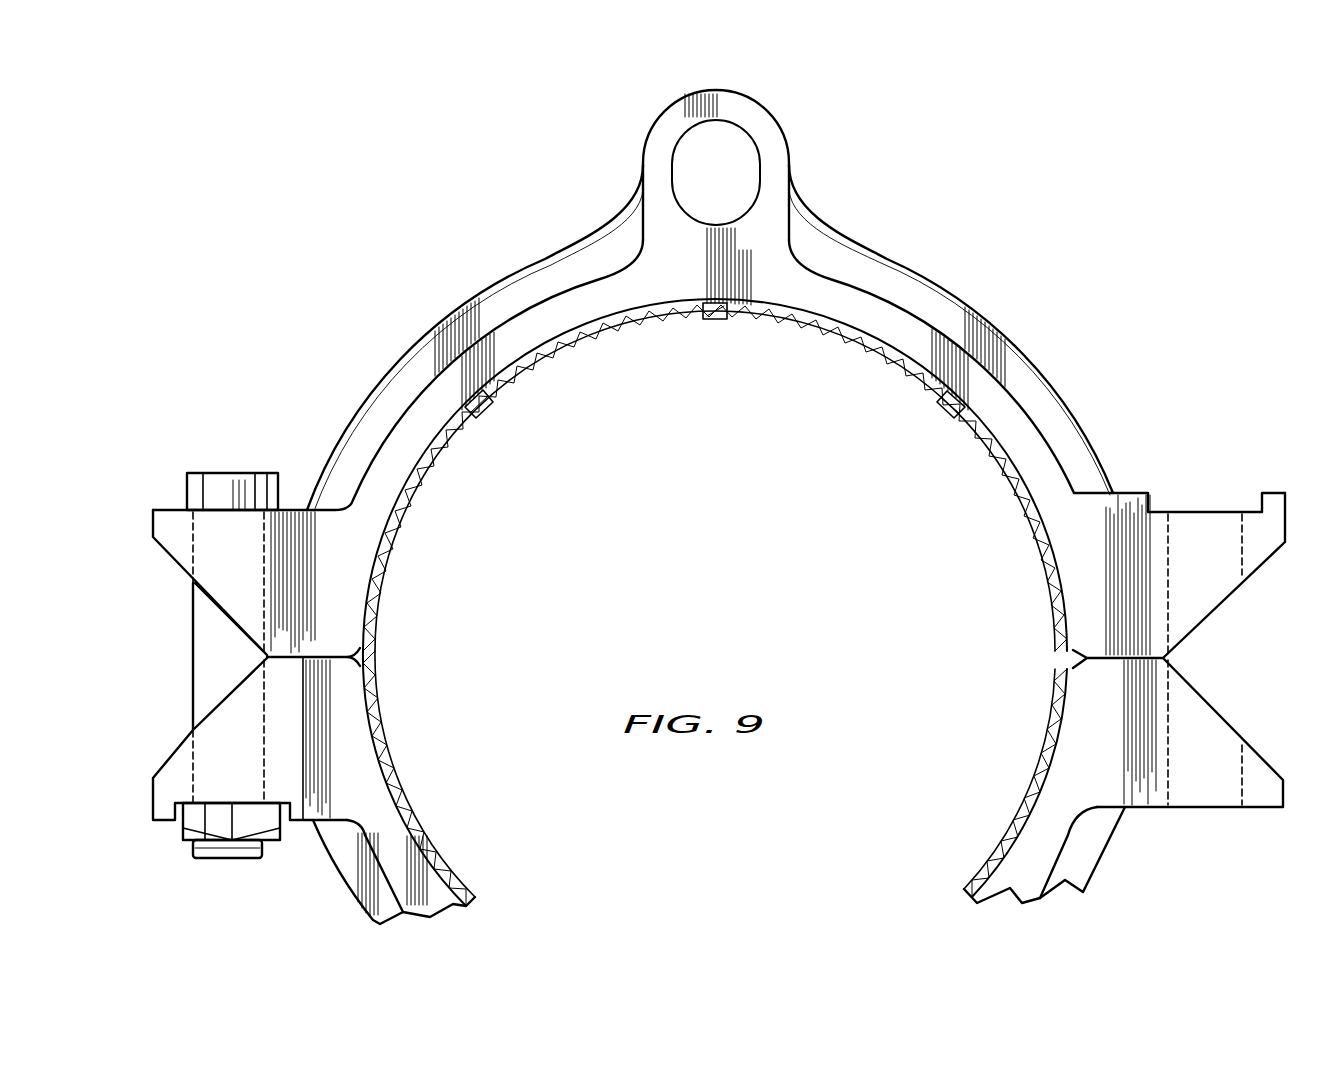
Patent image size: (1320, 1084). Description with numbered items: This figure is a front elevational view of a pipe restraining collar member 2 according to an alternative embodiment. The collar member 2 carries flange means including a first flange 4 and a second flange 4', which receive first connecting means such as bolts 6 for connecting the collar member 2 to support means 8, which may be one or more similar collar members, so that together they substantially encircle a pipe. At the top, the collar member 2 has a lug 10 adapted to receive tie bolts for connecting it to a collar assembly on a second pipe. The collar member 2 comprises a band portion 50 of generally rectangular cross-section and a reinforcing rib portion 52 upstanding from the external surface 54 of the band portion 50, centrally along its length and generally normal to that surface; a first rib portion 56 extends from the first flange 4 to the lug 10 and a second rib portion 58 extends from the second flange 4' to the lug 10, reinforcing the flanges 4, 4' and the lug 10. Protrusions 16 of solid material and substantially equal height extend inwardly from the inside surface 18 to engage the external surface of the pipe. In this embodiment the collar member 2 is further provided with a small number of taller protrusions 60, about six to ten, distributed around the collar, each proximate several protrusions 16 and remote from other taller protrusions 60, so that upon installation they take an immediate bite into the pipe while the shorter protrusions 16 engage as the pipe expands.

The collar member 2 is at (470, 273).
The first flange 4 is at (230, 665).
The second flange 4' is at (1179, 634).
The bolts 6 is at (218, 482).
The support means 8 is at (372, 790).
The lug 10 is at (770, 114).
The protrusions 16 is at (574, 343).
The inside surface 18 is at (1048, 550).
The band portion 50 is at (904, 345).
The reinforcing rib portion 52 is at (887, 257).
The external surface 54 is at (914, 310).
The first rib portion 56 is at (428, 338).
The second rib portion 58 is at (1068, 398).
The taller protrusions 60 is at (719, 320).